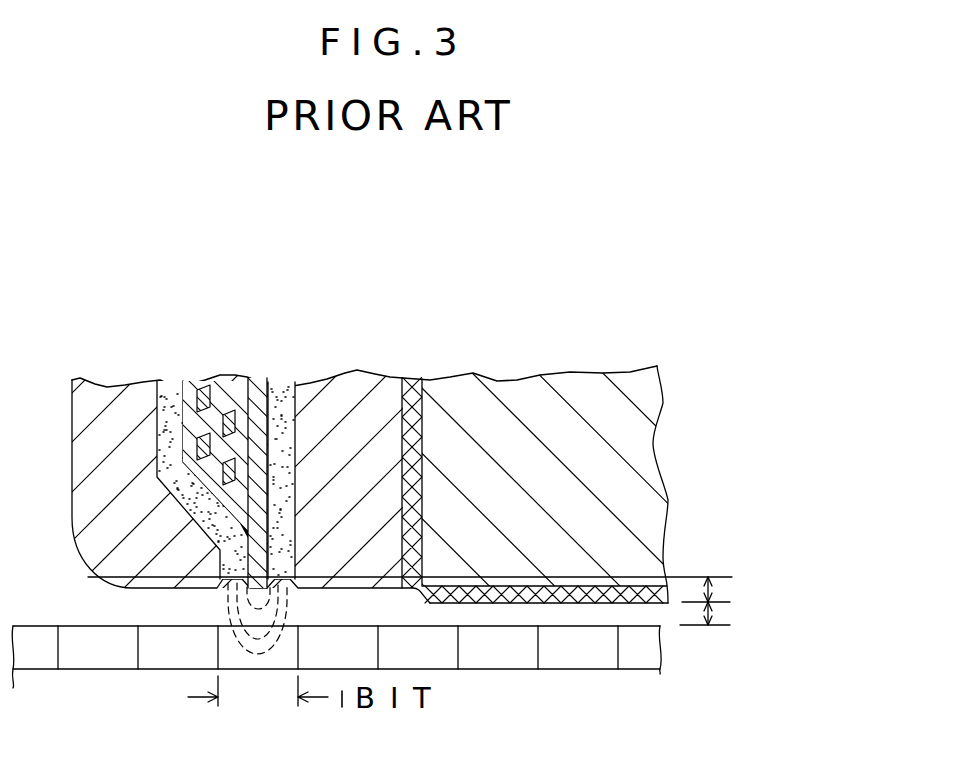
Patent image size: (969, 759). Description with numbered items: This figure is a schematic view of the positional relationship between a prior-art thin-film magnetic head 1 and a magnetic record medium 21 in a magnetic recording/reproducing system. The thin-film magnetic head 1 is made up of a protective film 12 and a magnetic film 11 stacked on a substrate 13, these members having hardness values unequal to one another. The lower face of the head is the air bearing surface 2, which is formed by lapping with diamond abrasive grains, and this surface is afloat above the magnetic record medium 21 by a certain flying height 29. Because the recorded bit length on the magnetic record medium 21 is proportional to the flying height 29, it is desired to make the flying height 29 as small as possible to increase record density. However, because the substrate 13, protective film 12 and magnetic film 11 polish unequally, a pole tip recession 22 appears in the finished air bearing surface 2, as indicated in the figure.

The thin-film magnetic head 1 is at (802, 603).
The air bearing surface 2 is at (102, 578).
The magnetic film 11 is at (277, 390).
The protective film 12 is at (336, 393).
The substrate 13 is at (498, 380).
The magnetic record medium 21 is at (573, 677).
The pole tip recession 22 is at (722, 590).
The flying height 29 is at (722, 618).